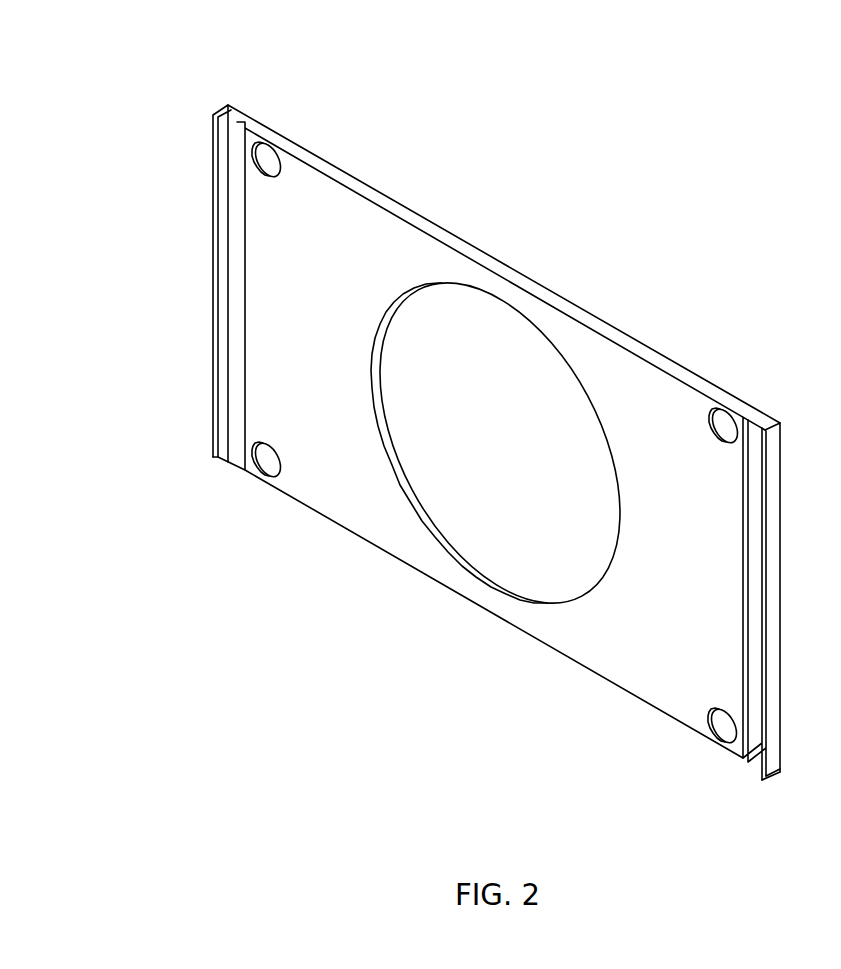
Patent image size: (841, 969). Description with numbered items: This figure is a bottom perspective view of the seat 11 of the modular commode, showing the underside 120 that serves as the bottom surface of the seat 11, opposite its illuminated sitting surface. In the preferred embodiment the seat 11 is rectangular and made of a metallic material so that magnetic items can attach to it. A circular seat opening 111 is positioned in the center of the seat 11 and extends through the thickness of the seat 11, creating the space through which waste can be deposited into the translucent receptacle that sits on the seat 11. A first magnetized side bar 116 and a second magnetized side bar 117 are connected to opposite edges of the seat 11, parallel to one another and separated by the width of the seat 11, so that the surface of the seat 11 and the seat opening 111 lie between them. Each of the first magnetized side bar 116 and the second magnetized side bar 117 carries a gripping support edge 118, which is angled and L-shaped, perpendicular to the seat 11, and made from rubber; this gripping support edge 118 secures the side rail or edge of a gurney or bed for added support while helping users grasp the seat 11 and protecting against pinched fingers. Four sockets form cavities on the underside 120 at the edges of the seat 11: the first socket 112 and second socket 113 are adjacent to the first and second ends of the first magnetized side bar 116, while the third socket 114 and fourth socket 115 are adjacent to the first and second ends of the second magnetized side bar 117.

The seat 11 is at (137, 43).
The seat opening 111 is at (510, 340).
The first socket 112 is at (267, 157).
The second socket 113 is at (266, 464).
The third socket 114 is at (724, 423).
The fourth socket 115 is at (722, 724).
The first magnetized side bar 116 is at (237, 167).
The second magnetized side bar 117 is at (755, 470).
The gripping support edge 118 is at (216, 444).
The underside 120 is at (408, 245).